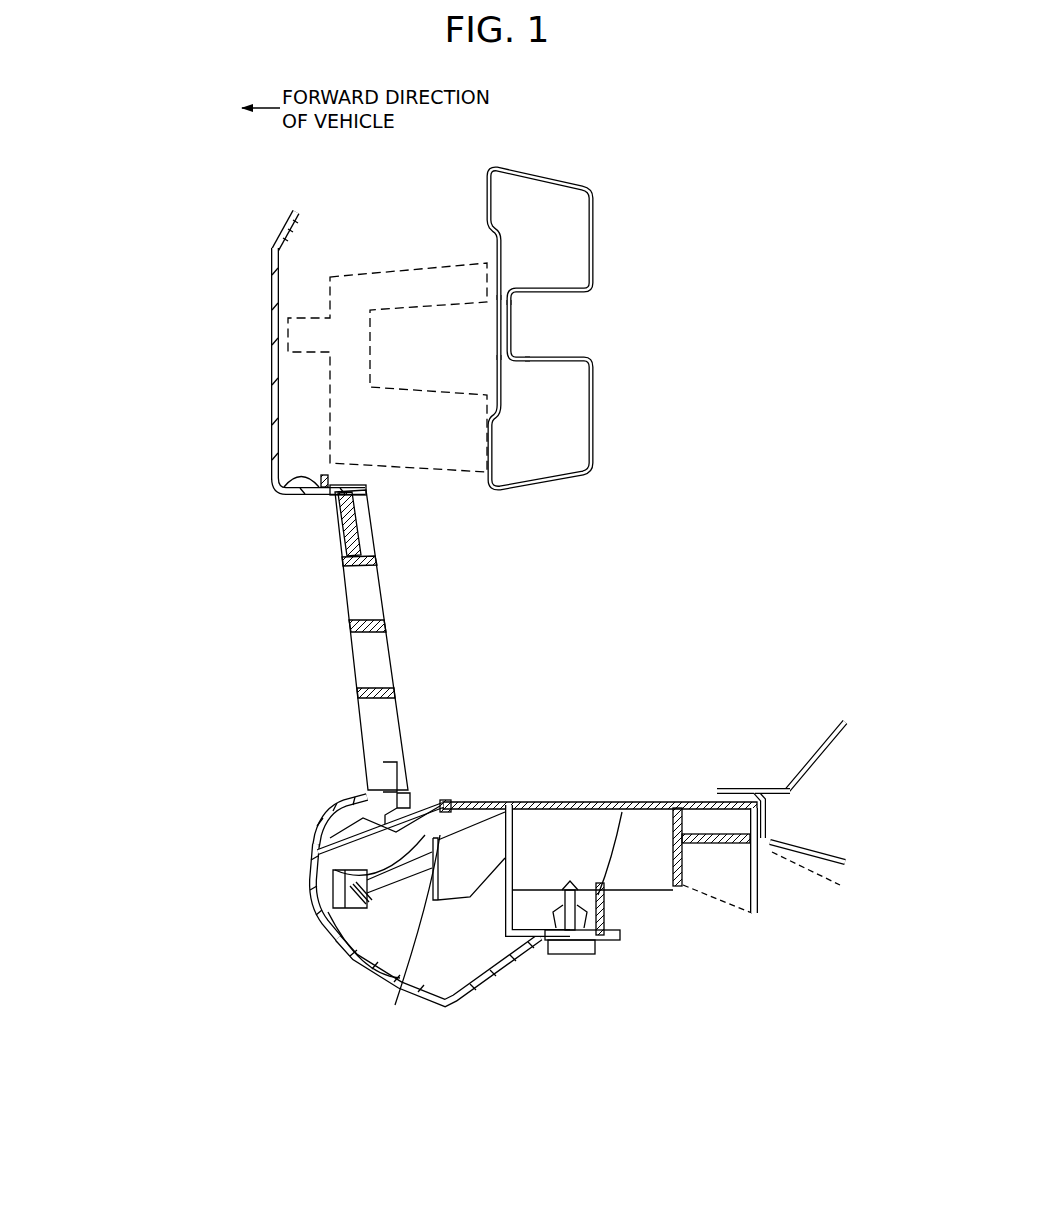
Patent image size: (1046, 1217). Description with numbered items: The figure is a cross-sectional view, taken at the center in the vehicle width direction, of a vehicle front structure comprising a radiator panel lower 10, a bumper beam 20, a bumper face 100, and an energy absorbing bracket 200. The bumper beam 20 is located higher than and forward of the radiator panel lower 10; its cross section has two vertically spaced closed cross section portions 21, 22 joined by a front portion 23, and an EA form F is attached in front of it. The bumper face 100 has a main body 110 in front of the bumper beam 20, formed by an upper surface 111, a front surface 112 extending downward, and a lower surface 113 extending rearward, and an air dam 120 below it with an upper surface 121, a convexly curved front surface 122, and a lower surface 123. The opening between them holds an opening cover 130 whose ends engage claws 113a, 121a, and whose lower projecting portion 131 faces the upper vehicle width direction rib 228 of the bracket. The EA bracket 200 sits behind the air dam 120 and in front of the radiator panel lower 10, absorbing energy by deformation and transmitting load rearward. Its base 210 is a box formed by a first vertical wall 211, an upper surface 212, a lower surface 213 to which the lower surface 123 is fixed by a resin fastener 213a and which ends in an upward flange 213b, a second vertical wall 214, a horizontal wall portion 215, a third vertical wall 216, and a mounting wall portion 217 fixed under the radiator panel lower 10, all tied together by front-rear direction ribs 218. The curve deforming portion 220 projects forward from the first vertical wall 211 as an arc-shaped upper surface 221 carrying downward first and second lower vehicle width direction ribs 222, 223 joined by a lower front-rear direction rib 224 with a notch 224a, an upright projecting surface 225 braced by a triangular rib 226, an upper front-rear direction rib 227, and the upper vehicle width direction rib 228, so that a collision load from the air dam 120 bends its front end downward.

The radiator panel lower 10 is at (792, 786).
The bumper beam 20 is at (596, 328).
The closed cross section portion 21 is at (595, 215).
The closed cross section portion 22 is at (578, 421).
The front portion 23 is at (513, 325).
The bumper face 100 is at (248, 197).
The main body 110 is at (254, 353).
The upper surface 111 is at (284, 230).
The front surface 112 is at (271, 352).
The lower surface 113 is at (278, 475).
The claw 113a is at (336, 512).
The air dam 120 is at (323, 917).
The upper surface 121 is at (277, 795).
The claw 121a is at (386, 790).
The front surface 122 is at (312, 848).
The lower surface 123 is at (505, 978).
The opening cover 130 is at (324, 637).
The projecting portion 131 is at (402, 822).
The EA bracket 200 is at (670, 688).
The base 210 is at (667, 863).
The first vertical wall 211 is at (497, 903).
The upper surface 212 is at (645, 815).
The lower surface 213 is at (612, 961).
The resin fastener 213a is at (573, 952).
The flange 213b is at (606, 912).
The second vertical wall 214 is at (678, 893).
The horizontal wall portion 215 is at (712, 845).
The third vertical wall 216 is at (753, 880).
The mounting wall portion 217 is at (822, 858).
The front-rear direction rib 218 is at (594, 800).
The curve deforming portion 220 is at (404, 862).
The upper surface 221 is at (321, 848).
The first lower vehicle width direction rib 222 is at (348, 905).
The second lower vehicle width direction rib 223 is at (362, 942).
The lower front-rear direction rib 224 is at (474, 901).
The notch 224a is at (428, 905).
The projecting surface 225 is at (342, 881).
The triangular rib 226 is at (348, 893).
The upper front-rear direction rib 227 is at (333, 838).
The upper vehicle width direction rib 228 is at (446, 812).
The EA form F is at (397, 268).